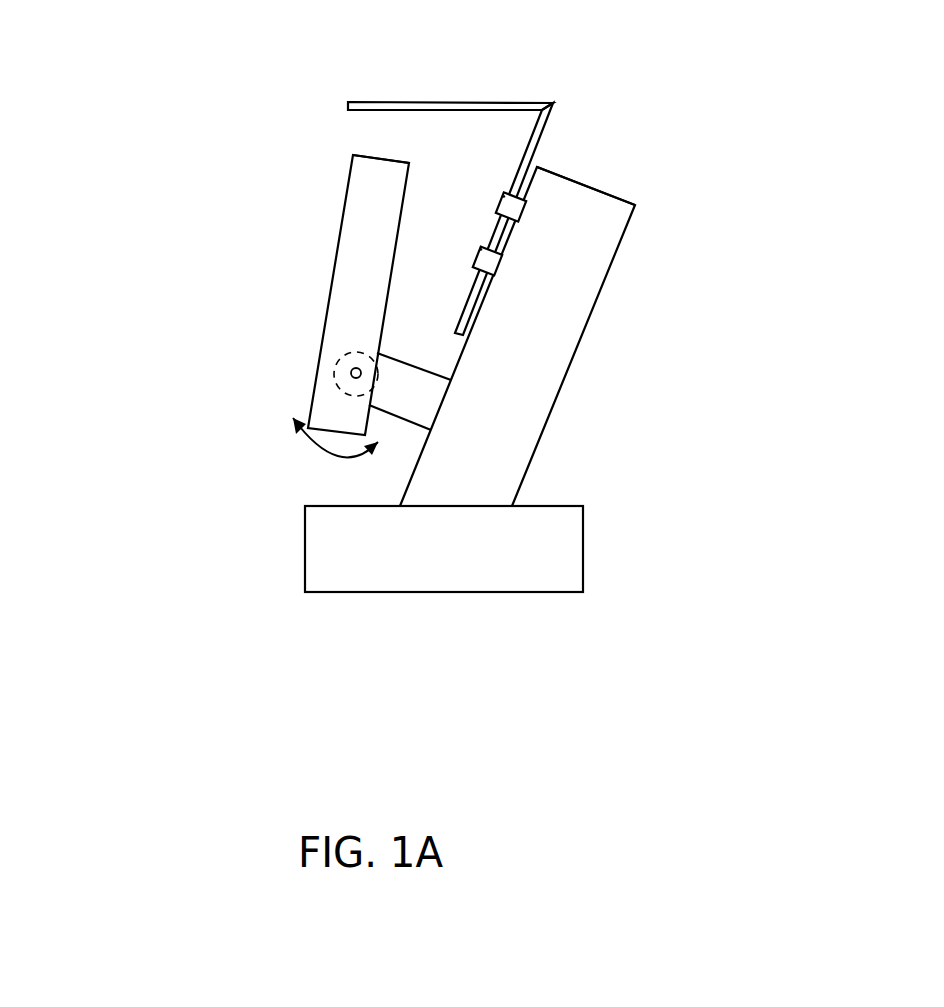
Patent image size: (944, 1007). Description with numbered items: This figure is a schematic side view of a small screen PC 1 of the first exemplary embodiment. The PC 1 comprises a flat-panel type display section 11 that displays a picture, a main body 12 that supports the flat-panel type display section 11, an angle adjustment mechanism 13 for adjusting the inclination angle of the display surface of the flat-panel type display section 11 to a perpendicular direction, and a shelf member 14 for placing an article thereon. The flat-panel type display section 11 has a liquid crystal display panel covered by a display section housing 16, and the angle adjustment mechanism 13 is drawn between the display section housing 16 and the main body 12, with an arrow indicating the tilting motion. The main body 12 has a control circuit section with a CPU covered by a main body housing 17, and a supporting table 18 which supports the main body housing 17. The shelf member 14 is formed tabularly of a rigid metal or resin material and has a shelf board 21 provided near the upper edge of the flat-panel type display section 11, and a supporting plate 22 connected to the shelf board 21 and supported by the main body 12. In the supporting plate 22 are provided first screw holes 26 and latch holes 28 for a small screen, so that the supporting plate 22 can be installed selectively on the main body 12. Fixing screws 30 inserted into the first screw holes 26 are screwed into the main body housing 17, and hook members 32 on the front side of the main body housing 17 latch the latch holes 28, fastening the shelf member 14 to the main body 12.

The PC 1 is at (574, 656).
The flat-panel type display section 11 is at (338, 281).
The main body 12 is at (556, 375).
The angle adjustment mechanism 13 is at (346, 362).
The shelf member 14 is at (527, 103).
The display section housing 16 is at (368, 157).
The main body housing 17 is at (612, 193).
The supporting table 18 is at (581, 562).
The shelf board 21 is at (432, 102).
The supporting plate 22 is at (529, 155).
The first screw holes 26 is at (497, 218).
The latch holes 28 is at (474, 268).
The fixing screws 30 is at (503, 197).
The hook members 32 is at (480, 250).